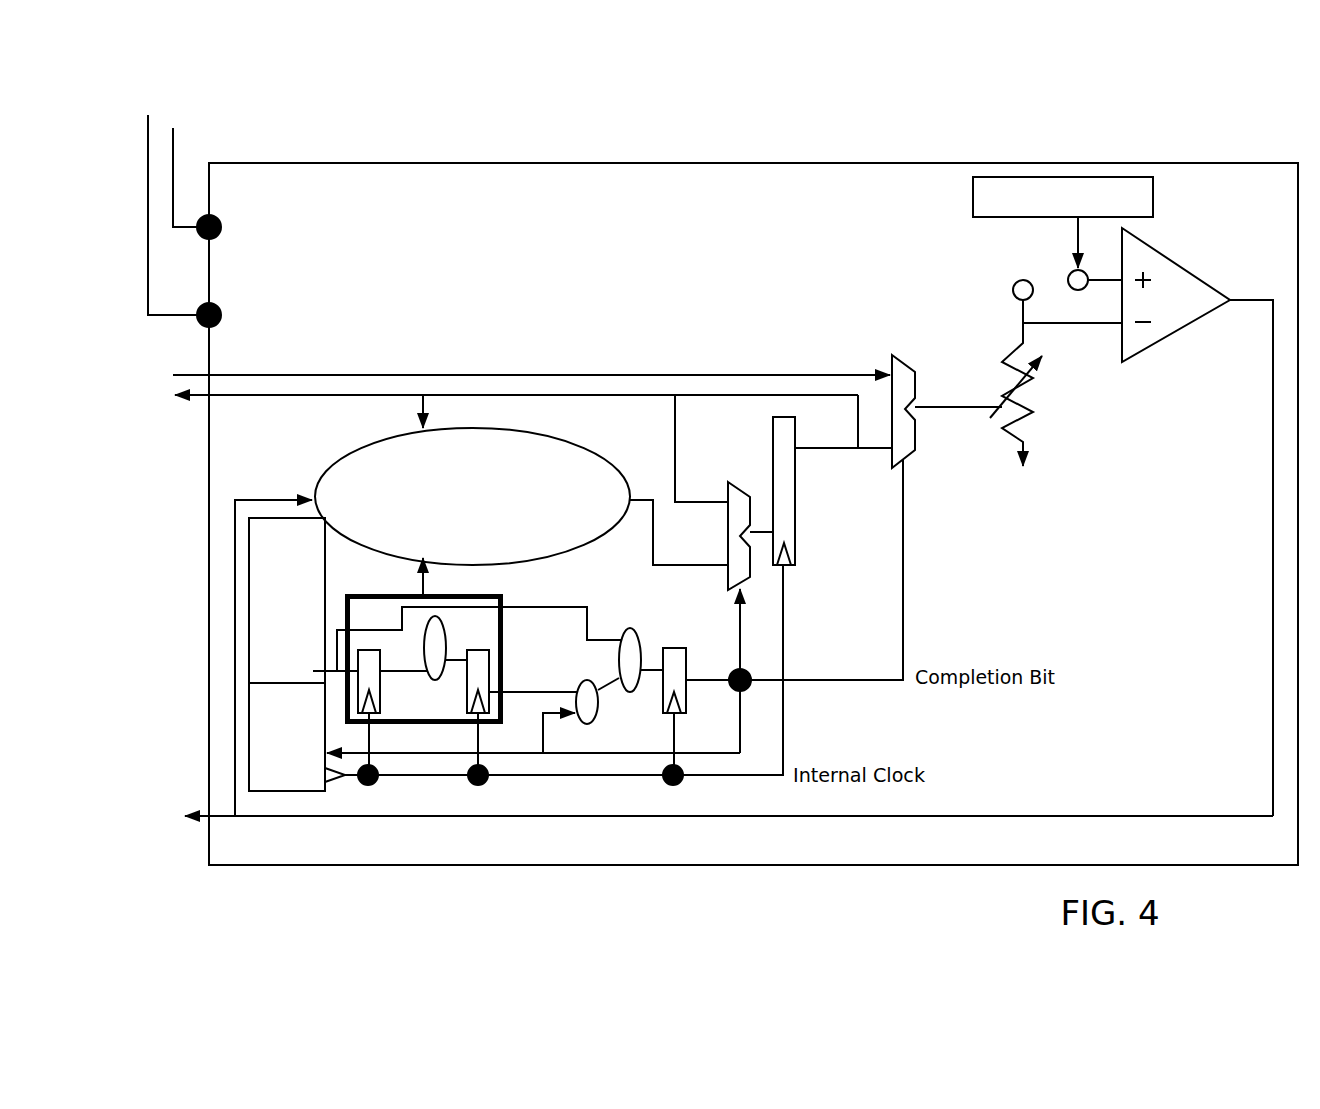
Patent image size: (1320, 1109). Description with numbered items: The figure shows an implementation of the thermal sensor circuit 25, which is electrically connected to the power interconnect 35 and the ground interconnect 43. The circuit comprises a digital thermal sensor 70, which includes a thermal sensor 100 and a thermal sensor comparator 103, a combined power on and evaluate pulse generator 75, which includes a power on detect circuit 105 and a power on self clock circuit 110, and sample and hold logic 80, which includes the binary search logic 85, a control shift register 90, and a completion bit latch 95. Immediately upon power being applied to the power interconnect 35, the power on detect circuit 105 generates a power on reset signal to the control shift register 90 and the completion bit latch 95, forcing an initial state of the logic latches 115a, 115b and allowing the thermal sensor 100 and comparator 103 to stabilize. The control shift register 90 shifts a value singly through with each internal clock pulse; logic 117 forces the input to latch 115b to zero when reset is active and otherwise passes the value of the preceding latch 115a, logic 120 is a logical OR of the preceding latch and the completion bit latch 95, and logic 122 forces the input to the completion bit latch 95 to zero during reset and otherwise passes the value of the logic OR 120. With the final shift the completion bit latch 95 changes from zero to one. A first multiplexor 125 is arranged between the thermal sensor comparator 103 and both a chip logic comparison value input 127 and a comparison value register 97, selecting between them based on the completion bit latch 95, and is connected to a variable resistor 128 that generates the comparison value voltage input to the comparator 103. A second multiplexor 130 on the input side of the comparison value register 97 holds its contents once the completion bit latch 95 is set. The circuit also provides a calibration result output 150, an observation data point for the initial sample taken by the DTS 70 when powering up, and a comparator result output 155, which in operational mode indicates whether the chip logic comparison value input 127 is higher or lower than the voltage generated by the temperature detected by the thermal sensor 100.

The thermal sensor circuit 25 is at (535, 160).
The power interconnect 35 is at (222, 226).
The ground interconnect 43 is at (222, 314).
The chip logic comparison value input 127 is at (506, 368).
The calibration result output 150 is at (507, 447).
The binary search logic 85 is at (343, 455).
The sample and hold logic 80 is at (616, 352).
The combined power on and evaluate pulse generator 75 is at (242, 540).
The power on detect circuit 105 is at (249, 577).
The power on self clock circuit 110 is at (249, 733).
The comparator result output 155 is at (698, 817).
The control shift register 90 is at (507, 593).
The logic latch 115a is at (379, 697).
The logic latch 115b is at (466, 697).
The logic 117 is at (435, 680).
The logic OR 120 is at (579, 684).
The logic 122 is at (628, 627).
The completion bit latch 95 is at (676, 649).
The second multiplexor 130 is at (733, 480).
The comparison value register 97 is at (797, 529).
The first multiplexor 125 is at (899, 358).
The thermal sensor 100 is at (975, 192).
The thermal sensor comparator 103 is at (1158, 345).
The variable resistor 128 is at (1054, 421).
The digital thermal sensor 70 is at (1161, 482).